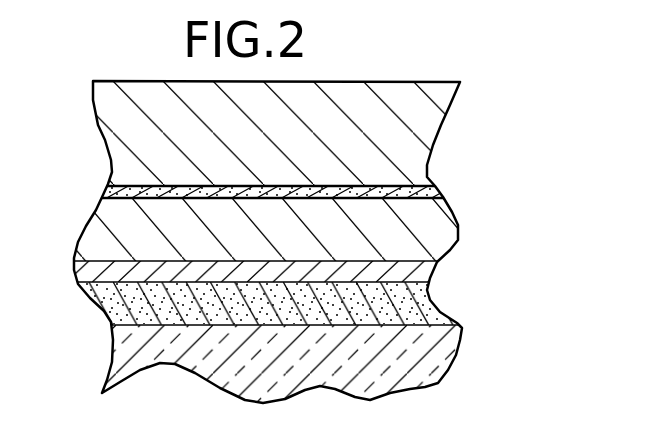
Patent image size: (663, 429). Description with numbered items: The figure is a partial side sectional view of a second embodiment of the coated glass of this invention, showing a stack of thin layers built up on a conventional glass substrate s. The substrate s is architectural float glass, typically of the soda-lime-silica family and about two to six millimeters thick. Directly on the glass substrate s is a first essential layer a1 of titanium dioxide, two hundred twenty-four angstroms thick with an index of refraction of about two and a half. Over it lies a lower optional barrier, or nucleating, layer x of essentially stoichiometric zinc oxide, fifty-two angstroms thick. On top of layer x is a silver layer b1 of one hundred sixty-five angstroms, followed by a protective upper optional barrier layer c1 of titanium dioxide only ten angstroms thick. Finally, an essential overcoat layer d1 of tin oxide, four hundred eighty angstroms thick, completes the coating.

The overcoat layer d1 is at (113, 142).
The upper barrier layer c1 is at (107, 190).
The silver layer b1 is at (100, 232).
The lower barrier layer x is at (85, 272).
The first essential layer a1 is at (112, 312).
The glass substrate s is at (127, 355).